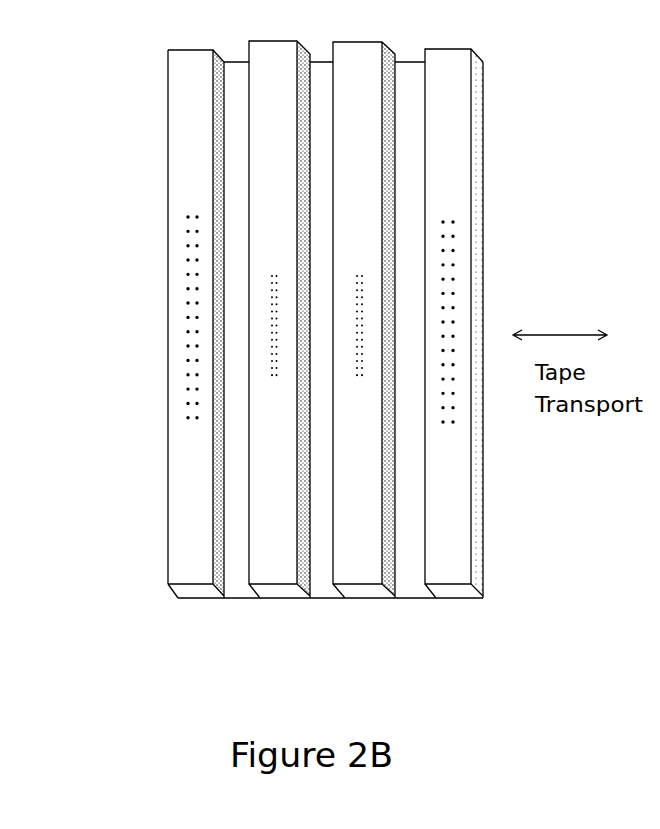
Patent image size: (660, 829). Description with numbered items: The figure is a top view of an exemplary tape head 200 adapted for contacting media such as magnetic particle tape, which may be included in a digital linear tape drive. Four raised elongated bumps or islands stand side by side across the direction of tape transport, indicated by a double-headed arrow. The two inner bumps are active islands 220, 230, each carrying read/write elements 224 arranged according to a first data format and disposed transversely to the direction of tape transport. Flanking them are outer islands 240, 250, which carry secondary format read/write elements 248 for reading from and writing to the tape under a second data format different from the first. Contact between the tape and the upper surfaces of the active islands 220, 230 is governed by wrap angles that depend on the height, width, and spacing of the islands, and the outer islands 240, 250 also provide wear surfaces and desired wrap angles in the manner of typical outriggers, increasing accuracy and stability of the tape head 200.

The tape head 200 is at (153, 98).
The outer island 250 is at (180, 573).
The active island 230 is at (275, 573).
The active island 220 is at (358, 573).
The outer island 240 is at (445, 573).
The read/write elements 224 is at (262, 352).
The secondary format read/write elements 248 is at (177, 393).